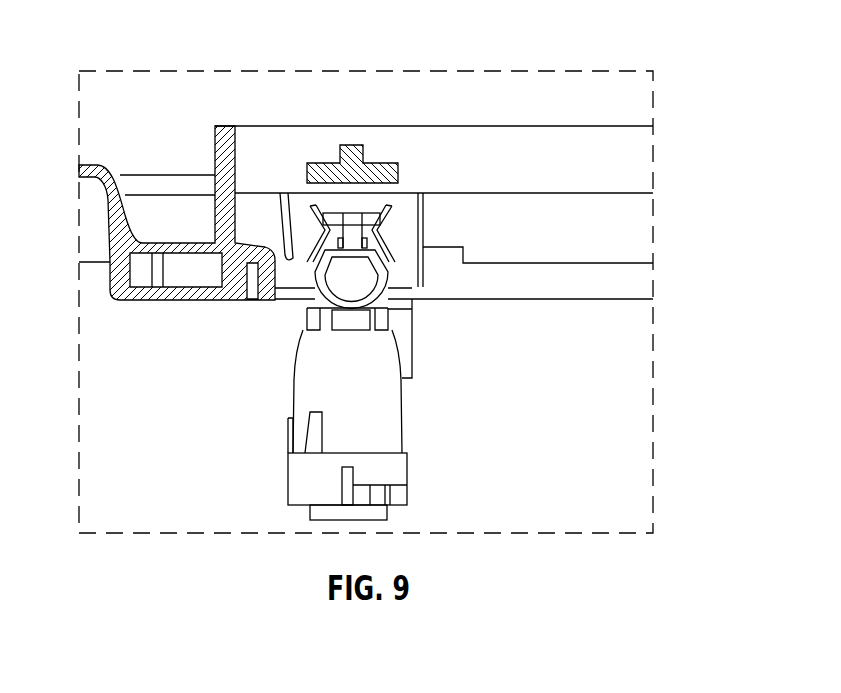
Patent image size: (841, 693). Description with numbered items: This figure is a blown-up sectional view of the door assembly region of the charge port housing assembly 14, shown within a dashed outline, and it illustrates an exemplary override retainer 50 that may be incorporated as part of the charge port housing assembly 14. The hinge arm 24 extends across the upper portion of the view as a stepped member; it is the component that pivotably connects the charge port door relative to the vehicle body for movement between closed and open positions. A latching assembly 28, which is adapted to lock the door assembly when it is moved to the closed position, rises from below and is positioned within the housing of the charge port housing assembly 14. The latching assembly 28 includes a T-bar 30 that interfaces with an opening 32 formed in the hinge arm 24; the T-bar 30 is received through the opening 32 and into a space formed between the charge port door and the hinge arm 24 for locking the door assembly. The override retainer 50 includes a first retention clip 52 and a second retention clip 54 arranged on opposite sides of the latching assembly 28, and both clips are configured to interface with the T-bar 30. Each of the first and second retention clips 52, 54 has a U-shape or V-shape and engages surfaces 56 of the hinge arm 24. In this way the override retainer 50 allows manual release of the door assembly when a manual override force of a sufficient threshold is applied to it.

The charge port housing assembly 14 is at (625, 71).
The hinge arm 24 is at (632, 233).
The latching assembly 28 is at (400, 430).
The T-bar 30 is at (370, 220).
The opening 32 is at (340, 207).
The override retainer 50 is at (292, 277).
The first retention clip 52 is at (281, 252).
The second retention clip 54 is at (403, 272).
The surfaces 56 is at (277, 214).